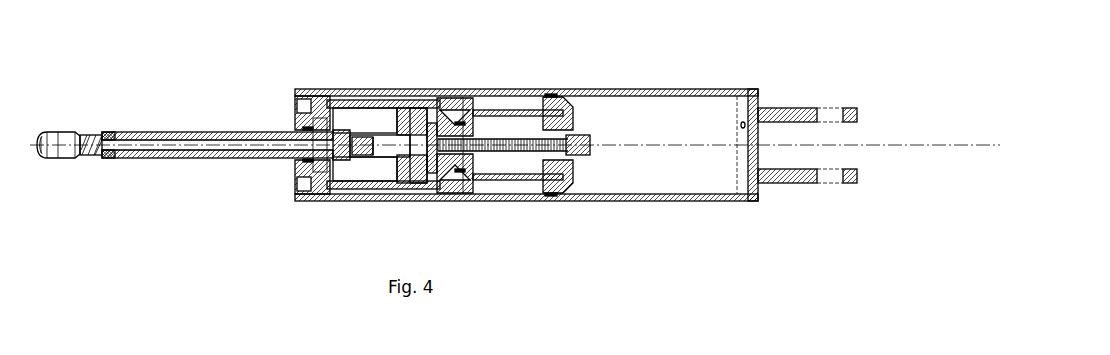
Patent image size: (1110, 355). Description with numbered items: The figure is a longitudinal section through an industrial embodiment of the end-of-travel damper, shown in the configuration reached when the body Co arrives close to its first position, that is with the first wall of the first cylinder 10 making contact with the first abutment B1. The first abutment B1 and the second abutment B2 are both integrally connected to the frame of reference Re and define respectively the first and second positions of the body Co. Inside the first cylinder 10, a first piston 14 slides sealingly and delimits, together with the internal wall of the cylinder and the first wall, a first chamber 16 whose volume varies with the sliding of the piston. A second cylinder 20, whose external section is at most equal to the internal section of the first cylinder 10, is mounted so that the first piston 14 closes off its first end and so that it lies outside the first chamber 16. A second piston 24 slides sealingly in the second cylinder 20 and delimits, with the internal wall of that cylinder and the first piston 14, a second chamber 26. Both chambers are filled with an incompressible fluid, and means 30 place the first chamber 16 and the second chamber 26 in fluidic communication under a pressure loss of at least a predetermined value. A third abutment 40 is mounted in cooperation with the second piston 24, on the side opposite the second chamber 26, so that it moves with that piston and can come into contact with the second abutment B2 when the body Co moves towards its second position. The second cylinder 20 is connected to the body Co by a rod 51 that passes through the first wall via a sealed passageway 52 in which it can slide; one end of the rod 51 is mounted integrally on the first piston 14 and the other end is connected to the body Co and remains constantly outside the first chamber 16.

The body Co is at (56, 118).
The rod 51 is at (183, 132).
The sealed passageway 52 is at (322, 98).
The first abutment B1 is at (307, 114).
The first cylinder 10 is at (390, 103).
The first chamber 16 is at (350, 173).
The means for placing the first and second chambers in fluidic communication 30 is at (380, 140).
The first piston 14 is at (408, 177).
The second chamber 26 is at (423, 117).
The second piston 24 is at (445, 163).
The second cylinder 20 is at (502, 177).
The third abutment 40 is at (594, 137).
The second abutment B2 is at (763, 103).
The frame of reference Re is at (823, 178).